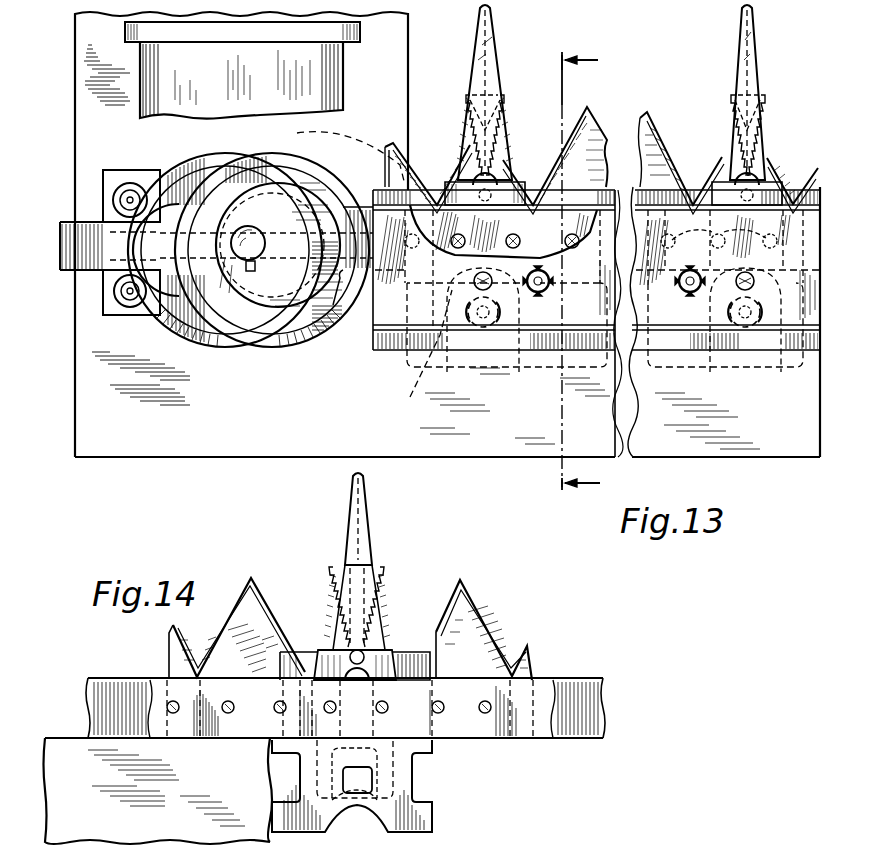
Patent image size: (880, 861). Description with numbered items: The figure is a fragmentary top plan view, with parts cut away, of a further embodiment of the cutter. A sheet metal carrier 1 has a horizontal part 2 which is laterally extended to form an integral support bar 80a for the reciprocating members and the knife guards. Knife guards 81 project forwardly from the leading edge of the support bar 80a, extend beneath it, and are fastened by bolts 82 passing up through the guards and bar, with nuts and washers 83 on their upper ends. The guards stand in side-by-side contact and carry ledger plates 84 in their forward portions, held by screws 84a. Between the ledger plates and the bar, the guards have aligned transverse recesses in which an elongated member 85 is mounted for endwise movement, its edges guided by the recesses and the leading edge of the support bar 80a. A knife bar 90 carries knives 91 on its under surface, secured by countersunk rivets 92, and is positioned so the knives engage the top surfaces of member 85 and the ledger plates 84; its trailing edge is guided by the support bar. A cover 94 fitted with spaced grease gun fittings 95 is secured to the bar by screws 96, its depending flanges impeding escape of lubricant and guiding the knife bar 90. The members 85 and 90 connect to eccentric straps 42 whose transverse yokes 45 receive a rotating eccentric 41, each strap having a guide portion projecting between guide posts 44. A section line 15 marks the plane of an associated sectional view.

In FIG. 13, the carrier 1 is at (410, 48).
In FIG. 13, the horizontal part 2 is at (218, 420).
In FIG. 13, the section line 15 is at (599, 274).
In FIG. 13, the eccentric 41 is at (317, 236).
In FIG. 13, the eccentric straps 42 is at (186, 312).
In FIG. 13, the guide posts 44 is at (135, 183).
In FIG. 13, the yokes 45 is at (283, 172).
In FIG. 13, the support bar 80a is at (502, 396).
In FIG. 14, the support bar 80a is at (120, 818).
In FIG. 13, the knife guards 81 is at (488, 56).
In FIG. 14, the knife guards 81 is at (362, 530).
In FIG. 13, the bolts 82 is at (483, 338).
In FIG. 13, the nuts and washers 83 is at (466, 330).
In FIG. 13, the ledger plates 84 is at (500, 143).
In FIG. 14, the ledger plates 84 is at (378, 597).
In FIG. 13, the screws 84a is at (455, 190).
In FIG. 14, the screws 84a is at (366, 660).
In FIG. 13, the elongated member 85 is at (378, 186).
In FIG. 14, the elongated member 85 is at (118, 705).
In FIG. 13, the knife bar 90 is at (372, 230).
In FIG. 14, the knife bar 90 is at (488, 730).
In FIG. 13, the knives 91 is at (582, 162).
In FIG. 14, the knives 91 is at (272, 620).
In FIG. 13, the countersunk rivets 92 is at (570, 240).
In FIG. 14, the countersunk rivets 92 is at (276, 710).
In FIG. 13, the cover 94 is at (376, 305).
In FIG. 13, the grease gun fittings 95 is at (546, 290).
In FIG. 14, the grease gun fittings 95 is at (282, 860).
In FIG. 13, the screws 96 is at (474, 282).